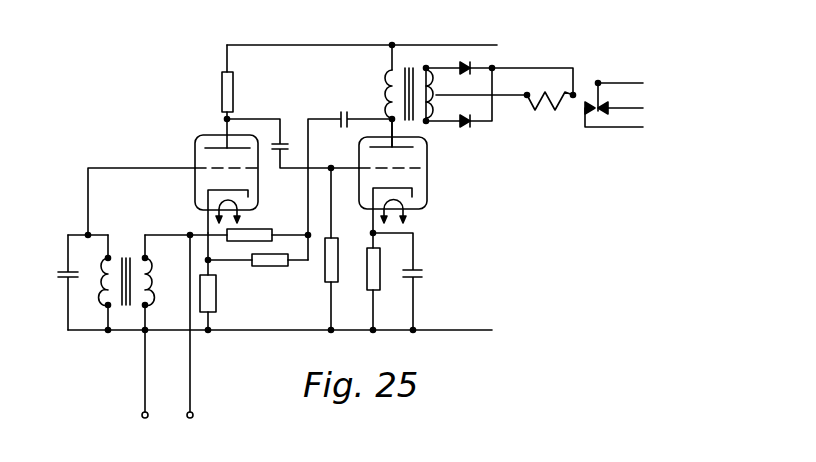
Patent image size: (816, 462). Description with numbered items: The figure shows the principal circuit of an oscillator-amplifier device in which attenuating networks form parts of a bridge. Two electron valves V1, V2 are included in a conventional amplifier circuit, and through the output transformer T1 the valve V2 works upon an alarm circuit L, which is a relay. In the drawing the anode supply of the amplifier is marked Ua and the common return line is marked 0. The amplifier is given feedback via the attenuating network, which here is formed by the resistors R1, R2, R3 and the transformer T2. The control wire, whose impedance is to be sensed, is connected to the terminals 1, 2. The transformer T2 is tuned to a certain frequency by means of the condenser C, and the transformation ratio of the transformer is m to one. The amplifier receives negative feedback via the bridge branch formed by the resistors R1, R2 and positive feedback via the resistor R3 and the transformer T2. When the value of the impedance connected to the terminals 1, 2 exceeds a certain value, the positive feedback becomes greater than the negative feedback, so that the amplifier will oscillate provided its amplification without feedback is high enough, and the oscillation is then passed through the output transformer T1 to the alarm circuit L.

The electron valve V1 is at (210, 184).
The electron valve V2 is at (410, 176).
The output transformer T1 is at (395, 96).
The transformer T2 is at (122, 288).
The resistor R1 is at (257, 277).
The resistor R2 is at (222, 283).
The resistor R3 is at (267, 222).
The condenser C is at (62, 282).
The alarm circuit L is at (506, 116).
The anode supply voltage Ua is at (387, 49).
The ground rail 0 is at (290, 330).
The terminal 1 is at (144, 386).
The terminal 2 is at (189, 338).